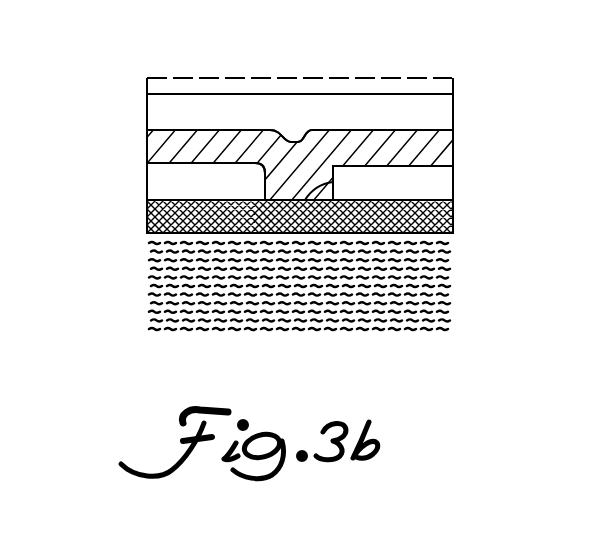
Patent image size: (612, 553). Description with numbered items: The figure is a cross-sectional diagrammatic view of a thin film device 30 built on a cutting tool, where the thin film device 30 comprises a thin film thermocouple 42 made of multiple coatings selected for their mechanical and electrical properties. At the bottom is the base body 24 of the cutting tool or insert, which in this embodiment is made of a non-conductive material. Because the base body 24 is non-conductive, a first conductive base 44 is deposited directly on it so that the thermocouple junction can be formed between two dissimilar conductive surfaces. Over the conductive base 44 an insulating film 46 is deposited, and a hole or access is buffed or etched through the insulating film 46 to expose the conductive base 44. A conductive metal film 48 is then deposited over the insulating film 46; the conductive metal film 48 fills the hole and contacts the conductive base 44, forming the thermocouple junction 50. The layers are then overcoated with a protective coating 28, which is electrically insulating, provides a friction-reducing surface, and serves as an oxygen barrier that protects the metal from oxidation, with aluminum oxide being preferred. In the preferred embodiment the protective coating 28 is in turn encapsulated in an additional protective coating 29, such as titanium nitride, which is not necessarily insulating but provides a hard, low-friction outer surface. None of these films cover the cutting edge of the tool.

The thin film device 30 is at (340, 60).
The additional protective coating 29 is at (452, 81).
The protective coating 28 is at (147, 123).
The thin film thermocouple 42 is at (458, 118).
The conductive metal film 48 is at (147, 156).
The thermocouple junction 50 is at (297, 138).
The insulating film 46 is at (453, 187).
The conductive base 44 is at (448, 228).
The base body 24 is at (449, 263).